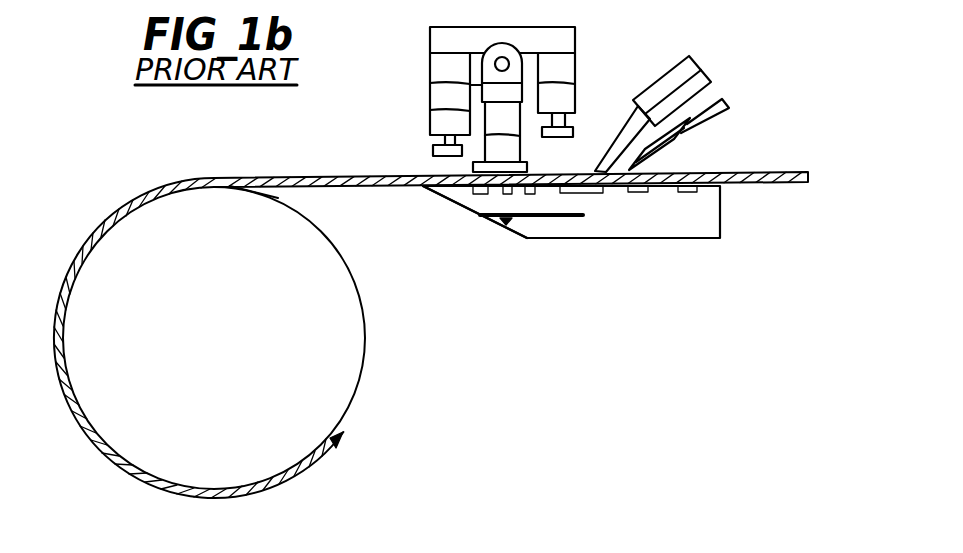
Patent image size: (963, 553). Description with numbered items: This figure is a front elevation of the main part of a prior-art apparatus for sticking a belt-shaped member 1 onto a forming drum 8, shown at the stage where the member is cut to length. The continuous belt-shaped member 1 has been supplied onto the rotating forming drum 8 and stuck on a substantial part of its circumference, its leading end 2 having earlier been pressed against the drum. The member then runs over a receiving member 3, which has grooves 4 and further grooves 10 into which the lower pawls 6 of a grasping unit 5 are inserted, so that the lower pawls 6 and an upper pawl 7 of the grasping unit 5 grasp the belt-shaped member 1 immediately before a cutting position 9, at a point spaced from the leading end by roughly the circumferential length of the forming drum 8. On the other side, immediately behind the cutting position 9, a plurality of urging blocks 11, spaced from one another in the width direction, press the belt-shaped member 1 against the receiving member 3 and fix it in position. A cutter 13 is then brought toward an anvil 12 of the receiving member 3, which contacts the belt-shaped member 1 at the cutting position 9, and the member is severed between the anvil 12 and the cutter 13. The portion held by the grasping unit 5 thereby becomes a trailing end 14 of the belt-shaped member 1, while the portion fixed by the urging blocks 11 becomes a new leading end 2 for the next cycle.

The belt-shaped member 1 is at (305, 176).
The leading end 2 is at (330, 455).
The receiving member 3 is at (553, 228).
The grooves 4 is at (672, 194).
The grasping unit 5 is at (476, 152).
The lower pawls 6 is at (482, 196).
The upper pawl 7 is at (530, 166).
The forming drum 8 is at (366, 340).
The cutting position 9 is at (594, 168).
The grooves 10 is at (459, 214).
The urging blocks 11 is at (698, 146).
The anvil 12 is at (589, 194).
The cutter 13 is at (632, 128).
The trailing end 14 is at (510, 196).